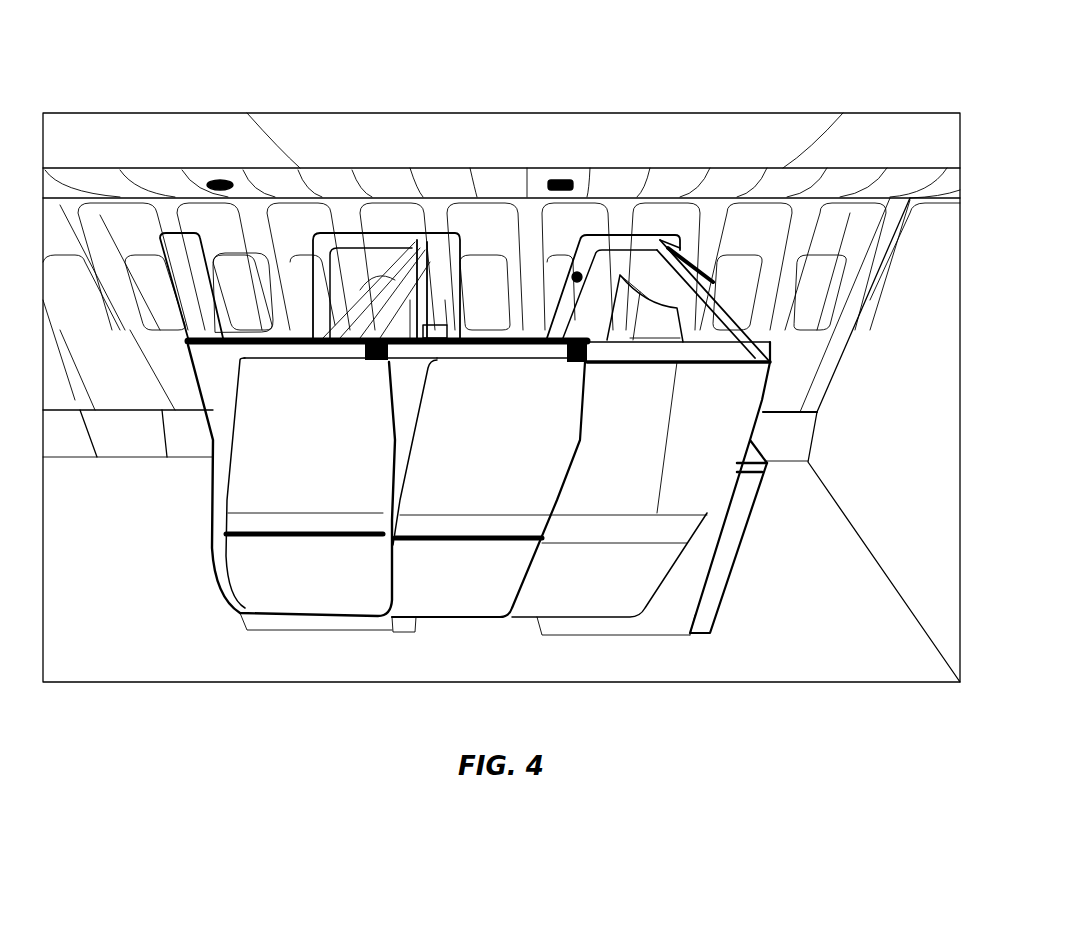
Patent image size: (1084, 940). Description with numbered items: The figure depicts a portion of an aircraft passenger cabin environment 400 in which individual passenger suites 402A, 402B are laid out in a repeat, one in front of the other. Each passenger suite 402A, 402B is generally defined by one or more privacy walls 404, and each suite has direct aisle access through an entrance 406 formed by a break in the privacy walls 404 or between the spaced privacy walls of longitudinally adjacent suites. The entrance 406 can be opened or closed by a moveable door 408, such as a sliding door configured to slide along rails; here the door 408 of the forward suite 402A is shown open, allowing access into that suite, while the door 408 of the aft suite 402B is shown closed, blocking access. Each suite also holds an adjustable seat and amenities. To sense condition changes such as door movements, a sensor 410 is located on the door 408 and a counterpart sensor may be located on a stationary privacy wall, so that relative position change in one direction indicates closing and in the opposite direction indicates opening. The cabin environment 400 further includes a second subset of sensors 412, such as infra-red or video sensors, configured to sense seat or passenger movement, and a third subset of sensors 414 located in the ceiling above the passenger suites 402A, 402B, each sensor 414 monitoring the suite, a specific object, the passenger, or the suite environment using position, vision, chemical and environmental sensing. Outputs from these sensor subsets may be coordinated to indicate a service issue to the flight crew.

The aircraft passenger cabin environment 400 is at (164, 80).
The forward passenger suite 402A is at (348, 196).
The aft passenger suite 402B is at (619, 191).
The privacy wall 404 is at (703, 482).
The entrance 406 is at (209, 622).
The moveable door 408 is at (287, 600).
The sensor 410 is at (373, 358).
The second subset of sensors 412 is at (578, 273).
The third subset of sensors 414 is at (222, 182).